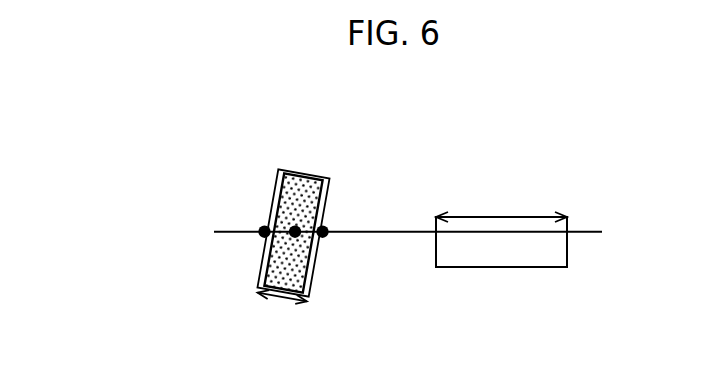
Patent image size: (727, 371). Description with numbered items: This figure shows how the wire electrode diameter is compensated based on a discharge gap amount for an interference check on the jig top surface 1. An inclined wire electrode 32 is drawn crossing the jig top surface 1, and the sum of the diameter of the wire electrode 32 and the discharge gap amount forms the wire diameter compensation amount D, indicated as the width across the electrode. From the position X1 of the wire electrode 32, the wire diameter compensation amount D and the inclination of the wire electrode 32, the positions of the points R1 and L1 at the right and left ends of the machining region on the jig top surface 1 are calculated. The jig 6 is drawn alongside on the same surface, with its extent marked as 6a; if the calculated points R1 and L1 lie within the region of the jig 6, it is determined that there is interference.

The jig top surface 1 is at (423, 233).
The wire electrode 32 is at (302, 172).
The wire diameter compensation amount D is at (282, 311).
The position of the wire electrode X1 is at (294, 229).
The left end point of machining region L1 is at (264, 233).
The right end point of machining region R1 is at (323, 237).
The jig 6 is at (555, 267).
The width of component 6 6a is at (501, 199).